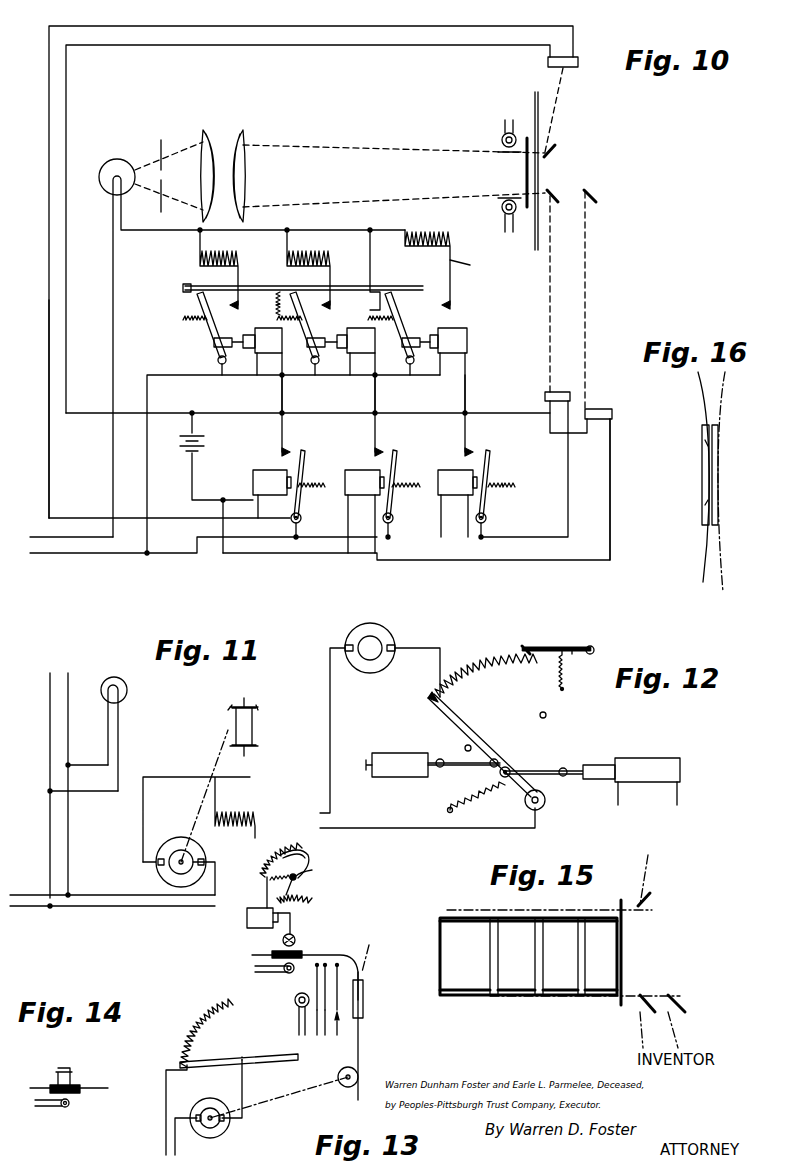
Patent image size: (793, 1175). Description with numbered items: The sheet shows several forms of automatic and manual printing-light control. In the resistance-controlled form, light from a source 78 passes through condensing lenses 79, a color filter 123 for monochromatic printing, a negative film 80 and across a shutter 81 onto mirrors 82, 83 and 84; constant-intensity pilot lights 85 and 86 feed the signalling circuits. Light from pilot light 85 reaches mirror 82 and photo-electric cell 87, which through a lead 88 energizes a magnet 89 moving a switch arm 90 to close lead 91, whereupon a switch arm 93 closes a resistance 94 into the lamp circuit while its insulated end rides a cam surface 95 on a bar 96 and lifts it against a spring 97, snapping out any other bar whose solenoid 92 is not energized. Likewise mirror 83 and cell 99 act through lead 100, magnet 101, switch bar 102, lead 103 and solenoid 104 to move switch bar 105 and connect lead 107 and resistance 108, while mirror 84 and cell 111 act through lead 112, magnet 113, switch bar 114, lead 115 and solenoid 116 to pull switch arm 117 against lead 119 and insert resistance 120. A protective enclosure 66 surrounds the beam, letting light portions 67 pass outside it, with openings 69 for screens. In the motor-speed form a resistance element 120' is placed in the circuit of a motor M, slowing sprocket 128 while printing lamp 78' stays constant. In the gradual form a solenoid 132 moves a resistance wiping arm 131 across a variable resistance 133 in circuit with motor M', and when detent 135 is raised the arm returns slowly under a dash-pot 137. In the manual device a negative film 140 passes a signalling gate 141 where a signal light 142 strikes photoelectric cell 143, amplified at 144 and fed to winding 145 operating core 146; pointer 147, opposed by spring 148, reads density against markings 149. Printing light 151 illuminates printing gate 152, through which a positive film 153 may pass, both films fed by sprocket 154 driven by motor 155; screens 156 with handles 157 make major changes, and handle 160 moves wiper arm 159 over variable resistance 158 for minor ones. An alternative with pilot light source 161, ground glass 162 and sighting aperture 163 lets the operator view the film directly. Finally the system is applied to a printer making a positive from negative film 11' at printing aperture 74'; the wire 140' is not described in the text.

In FIG. 10, the photo-electric cell 87 is at (578, 58).
In FIG. 10, the printing light source 78 is at (252, 328).
In FIG. 10, the lead 88 is at (50, 478).
In FIG. 10, the color filter 123 is at (163, 168).
In FIG. 10, the condensing lenses 79 is at (207, 128).
In FIG. 10, the shutter 81 is at (533, 100).
In FIG. 10, the negative film 80 is at (526, 140).
In FIG. 10, the pilot light 85 is at (502, 136).
In FIG. 10, the pilot light 86 is at (502, 210).
In FIG. 10, the mirror 82 is at (556, 148).
In FIG. 15, the mirror 82 is at (650, 898).
In FIG. 10, the mirror 84 is at (556, 202).
In FIG. 15, the mirror 84 is at (675, 1000).
In FIG. 10, the mirror 83 is at (596, 200).
In FIG. 15, the mirror 83 is at (648, 1000).
In FIG. 10, the resistance 94 is at (198, 270).
In FIG. 10, the resistance 108 is at (293, 268).
In FIG. 10, the resistance 120 is at (430, 255).
In FIG. 10, the lead 107 is at (366, 260).
In FIG. 10, the lead 119 is at (452, 266).
In FIG. 10, the bar 96 is at (182, 288).
In FIG. 10, the cam surface 95 is at (200, 300).
In FIG. 10, the switch arm 93 is at (185, 322).
In FIG. 10, the spring 97 is at (277, 305).
In FIG. 10, the solenoid 92 is at (268, 348).
In FIG. 10, the lead 91 is at (283, 394).
In FIG. 10, the switch bar 105 is at (303, 320).
In FIG. 10, the solenoid 104 is at (360, 348).
In FIG. 10, the lead 103 is at (376, 394).
In FIG. 10, the switch arm 117 is at (400, 328).
In FIG. 10, the solenoid 116 is at (455, 328).
In FIG. 10, the lead 115 is at (466, 392).
In FIG. 10, the photo-electric cell 111 is at (544, 396).
In FIG. 10, the photo-electric cell 99 is at (612, 414).
In FIG. 10, the lead 112 is at (526, 530).
In FIG. 10, the lead 100 is at (611, 535).
In FIG. 10, the magnet 89 is at (268, 470).
In FIG. 10, the switch arm 90 is at (306, 462).
In FIG. 10, the magnet 101 is at (360, 490).
In FIG. 10, the switch bar 102 is at (398, 462).
In FIG. 10, the magnet 113 is at (455, 490).
In FIG. 10, the switch bar 114 is at (491, 462).
In FIG. 16, the negative film 11' is at (683, 477).
In FIG. 16, the positive film / sighting aperture 163 is at (722, 388).
In FIG. 14, the positive film / sighting aperture 163 is at (56, 1075).
In FIG. 16, the printing aperture 74' is at (689, 475).
In FIG. 11, the printing lamp 78' is at (135, 734).
In FIG. 11, the sprocket 128 is at (255, 727).
In FIG. 11, the resistance element 120' is at (216, 819).
In FIG. 11, the motor M is at (177, 866).
In FIG. 12, the motor M' is at (392, 660).
In FIG. 12, the variable resistance 133 is at (492, 665).
In FIG. 12, the detent 135 is at (525, 648).
In FIG. 12, the resistance wiping arm 131 is at (487, 752).
In FIG. 12, the dash-pot 137 is at (392, 753).
In FIG. 12, the solenoid 132 is at (645, 762).
In FIG. 13, the winding 145 is at (262, 866).
In FIG. 13, the core 146 is at (305, 850).
In FIG. 13, the spring 148 is at (312, 870).
In FIG. 13, the pointer 147 is at (292, 883).
In FIG. 13, the markings 149 is at (312, 898).
In FIG. 13, the amplifier 144 is at (246, 920).
In FIG. 13, the photoelectric cell 143 is at (294, 936).
In FIG. 13, the signalling gate 141 is at (305, 950).
In FIG. 13, the negative film 140 is at (374, 1003).
In FIG. 13, the positive film 153 is at (369, 952).
In FIG. 13, the signal light 142 is at (255, 969).
In FIG. 13, the handle 157 is at (316, 985).
In FIG. 13, the printing light 151 is at (296, 1003).
In FIG. 13, the screens 156 is at (336, 1027).
In FIG. 13, the printing gate 152 is at (363, 990).
In FIG. 13, the variable resistance 158 is at (232, 1022).
In FIG. 13, the handle 160 is at (270, 1062).
In FIG. 13, the wiper arm 159 is at (200, 1068).
In FIG. 13, the motor 155 is at (222, 1132).
In FIG. 13, the sprocket 154 is at (342, 1084).
In FIG. 14, the wire 140' is at (87, 1077).
In FIG. 14, the ground glass 162 is at (82, 1084).
In FIG. 14, the pilot light source 161 is at (62, 1108).
In FIG. 15, the protective enclosure 66 is at (455, 998).
In FIG. 15, the light portions 67 is at (488, 1022).
In FIG. 15, the openings 69 is at (494, 985).